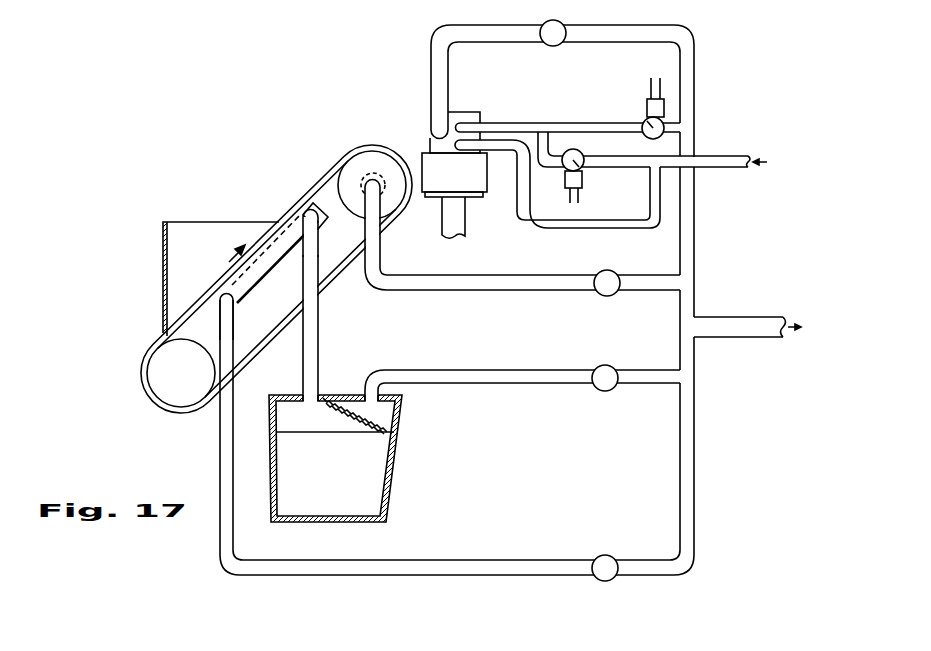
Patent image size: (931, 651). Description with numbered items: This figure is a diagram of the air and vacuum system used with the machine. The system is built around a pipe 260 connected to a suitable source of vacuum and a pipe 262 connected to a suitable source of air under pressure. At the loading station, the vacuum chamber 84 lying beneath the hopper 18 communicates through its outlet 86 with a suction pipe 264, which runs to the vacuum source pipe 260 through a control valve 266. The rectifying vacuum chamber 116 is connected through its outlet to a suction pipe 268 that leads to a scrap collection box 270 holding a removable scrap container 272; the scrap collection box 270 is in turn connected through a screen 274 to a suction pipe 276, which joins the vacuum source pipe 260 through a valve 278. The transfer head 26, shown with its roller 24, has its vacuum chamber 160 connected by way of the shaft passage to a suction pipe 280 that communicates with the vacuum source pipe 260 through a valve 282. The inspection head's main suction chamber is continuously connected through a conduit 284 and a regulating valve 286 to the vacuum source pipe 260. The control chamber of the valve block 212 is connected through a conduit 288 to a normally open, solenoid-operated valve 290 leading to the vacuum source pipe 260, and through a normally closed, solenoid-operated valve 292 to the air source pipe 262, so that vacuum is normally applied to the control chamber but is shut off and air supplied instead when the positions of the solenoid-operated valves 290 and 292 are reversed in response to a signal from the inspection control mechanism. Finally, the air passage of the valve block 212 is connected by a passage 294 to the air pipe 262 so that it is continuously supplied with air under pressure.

The hopper 18 is at (200, 222).
The roller 24 is at (358, 161).
The transfer head 26 is at (412, 140).
The vacuum chamber 84 is at (195, 318).
The outlet 86 is at (234, 302).
The rectifying vacuum chamber 116 is at (303, 212).
The vacuum chamber 160 is at (360, 180).
The dispensing device 212 is at (460, 113).
The pipe 260 is at (757, 317).
The pipe 262 is at (726, 157).
The suction pipe 264 is at (222, 445).
The control valve 266 is at (610, 583).
The suction pipe 268 is at (318, 330).
The scrap collection box 270 is at (393, 486).
The removable scrap container 272 is at (346, 479).
The screen 274 is at (397, 418).
The suction pipe 276 is at (430, 370).
The valve 278 is at (604, 365).
The suction pipe 280 is at (402, 282).
The valve 282 is at (607, 270).
The conduit 284 is at (492, 28).
The regulating valve 286 is at (556, 47).
The conduit 288 is at (502, 125).
The solenoid-operated valve 290 is at (648, 122).
The solenoid-operated valve 292 is at (579, 168).
The passage 294 is at (532, 222).